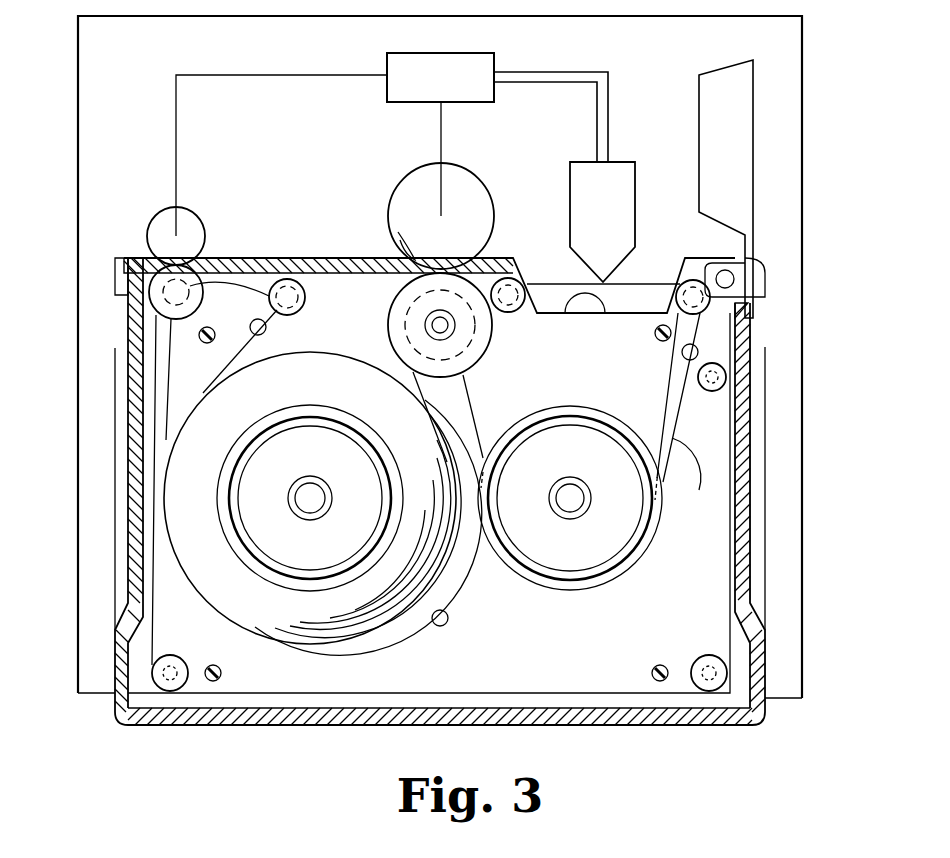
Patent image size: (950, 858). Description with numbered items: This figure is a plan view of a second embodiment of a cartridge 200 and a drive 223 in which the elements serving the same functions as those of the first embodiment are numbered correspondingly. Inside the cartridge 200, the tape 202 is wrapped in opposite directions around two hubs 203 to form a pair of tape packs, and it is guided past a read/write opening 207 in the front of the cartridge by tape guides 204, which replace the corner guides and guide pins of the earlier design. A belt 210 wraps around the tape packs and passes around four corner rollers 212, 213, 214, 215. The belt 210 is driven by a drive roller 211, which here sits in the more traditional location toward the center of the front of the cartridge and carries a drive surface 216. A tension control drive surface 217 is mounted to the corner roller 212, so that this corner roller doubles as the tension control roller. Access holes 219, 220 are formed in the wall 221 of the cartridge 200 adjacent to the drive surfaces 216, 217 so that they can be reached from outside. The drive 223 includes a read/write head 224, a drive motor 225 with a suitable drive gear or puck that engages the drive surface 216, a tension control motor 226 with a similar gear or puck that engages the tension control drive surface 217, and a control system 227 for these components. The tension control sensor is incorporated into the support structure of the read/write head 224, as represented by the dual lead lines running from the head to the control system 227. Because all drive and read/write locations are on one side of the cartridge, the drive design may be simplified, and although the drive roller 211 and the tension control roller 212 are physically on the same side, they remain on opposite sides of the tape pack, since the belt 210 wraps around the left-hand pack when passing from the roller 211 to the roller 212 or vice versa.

The cartridge 200 is at (553, 735).
The tape 202 is at (668, 384).
The hubs 203 is at (315, 500).
The tape guides 204 is at (290, 295).
The read/write opening 207 is at (598, 300).
The belt 210 is at (698, 478).
The drive roller 211 is at (492, 390).
The corner roller 212 is at (128, 275).
The corner roller 213 is at (170, 691).
The corner roller 214 is at (710, 691).
The corner roller 215 is at (718, 378).
The drive surface 216 is at (392, 337).
The tension control drive surface 217 is at (182, 292).
The access hole 219 is at (412, 255).
The access hole 220 is at (158, 259).
The wall 221 is at (757, 432).
The drive 223 is at (803, 240).
The read/write head 224 is at (608, 195).
The drive motor 225 is at (470, 210).
The tension control motor 226 is at (190, 236).
The control system 227 is at (478, 65).